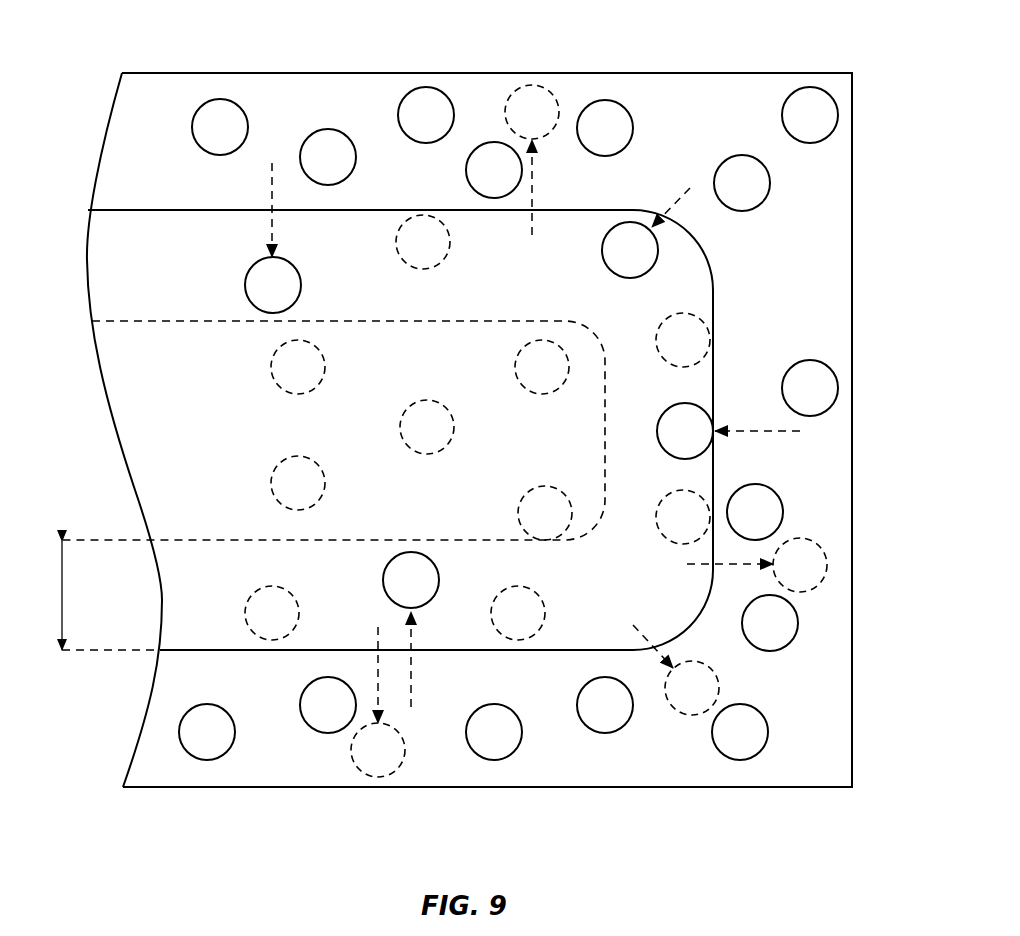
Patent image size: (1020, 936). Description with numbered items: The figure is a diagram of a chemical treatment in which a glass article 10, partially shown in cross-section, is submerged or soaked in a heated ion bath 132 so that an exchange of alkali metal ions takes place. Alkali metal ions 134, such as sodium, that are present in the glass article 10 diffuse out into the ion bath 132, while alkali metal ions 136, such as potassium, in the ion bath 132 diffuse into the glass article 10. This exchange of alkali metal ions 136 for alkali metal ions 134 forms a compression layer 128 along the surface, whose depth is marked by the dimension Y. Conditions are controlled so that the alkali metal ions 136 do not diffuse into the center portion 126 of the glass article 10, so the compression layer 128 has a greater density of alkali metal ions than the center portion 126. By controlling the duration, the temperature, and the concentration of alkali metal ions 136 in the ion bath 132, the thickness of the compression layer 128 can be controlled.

The glass article 10 is at (270, 658).
The center portion 126 is at (153, 432).
The compression layer 128 is at (170, 570).
The ion bath 132 is at (660, 790).
The alkali metal ions 134 is at (533, 86).
The alkali metal ions 136 is at (192, 127).
The depth dimension Y is at (60, 595).